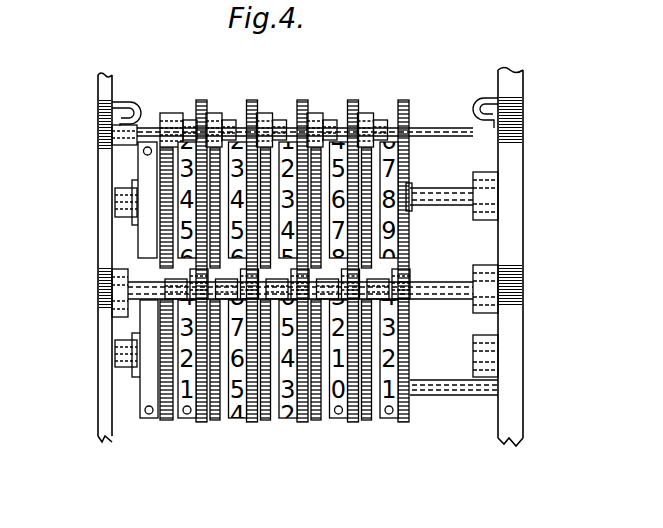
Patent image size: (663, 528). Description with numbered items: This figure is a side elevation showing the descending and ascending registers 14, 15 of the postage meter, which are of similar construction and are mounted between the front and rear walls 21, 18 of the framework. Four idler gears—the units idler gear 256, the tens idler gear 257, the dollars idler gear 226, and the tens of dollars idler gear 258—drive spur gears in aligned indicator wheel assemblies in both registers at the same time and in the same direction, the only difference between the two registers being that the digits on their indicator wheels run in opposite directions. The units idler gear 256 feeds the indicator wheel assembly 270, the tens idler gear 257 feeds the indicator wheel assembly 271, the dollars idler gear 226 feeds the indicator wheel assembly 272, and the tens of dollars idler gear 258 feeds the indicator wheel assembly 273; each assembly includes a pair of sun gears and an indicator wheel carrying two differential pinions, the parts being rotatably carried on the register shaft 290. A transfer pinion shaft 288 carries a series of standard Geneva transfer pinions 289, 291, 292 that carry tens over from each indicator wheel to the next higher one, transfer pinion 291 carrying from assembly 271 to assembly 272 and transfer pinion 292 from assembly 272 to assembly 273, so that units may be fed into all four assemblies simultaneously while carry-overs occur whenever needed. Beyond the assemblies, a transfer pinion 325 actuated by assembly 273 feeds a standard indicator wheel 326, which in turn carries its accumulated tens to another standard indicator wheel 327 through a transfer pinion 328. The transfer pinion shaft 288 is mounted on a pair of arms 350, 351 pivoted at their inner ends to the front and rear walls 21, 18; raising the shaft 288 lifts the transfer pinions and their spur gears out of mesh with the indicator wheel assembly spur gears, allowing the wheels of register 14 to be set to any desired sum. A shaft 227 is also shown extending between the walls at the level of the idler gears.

The descending register 14 is at (133, 230).
The ascending register 15 is at (196, 428).
The rear wall 18 is at (515, 83).
The front wall 21 is at (101, 86).
The dollars idler gear 226 is at (281, 281).
The middle shaft 227 is at (448, 287).
The units idler gear 256 is at (371, 273).
The tens idler gear 257 is at (332, 281).
The tens of dollars idler gear 258 is at (231, 281).
The indicator wheel assembly 270 is at (401, 146).
The indicator wheel assembly 271 is at (343, 132).
The indicator wheel assembly 272 is at (292, 132).
The indicator wheel assembly 273 is at (238, 132).
The transfer pinion shaft 288 is at (443, 130).
The Geneva transfer pinion 289 is at (369, 109).
The register shaft 290 is at (445, 197).
The Geneva transfer pinion 291 is at (318, 110).
The Geneva transfer pinion 292 is at (264, 110).
The transfer pinion 325 is at (208, 113).
The standard indicator wheel 326 is at (187, 122).
The standard indicator wheel 327 is at (137, 128).
The transfer pinion 328 is at (163, 113).
The arm 350 is at (483, 106).
The arm 351 is at (117, 107).